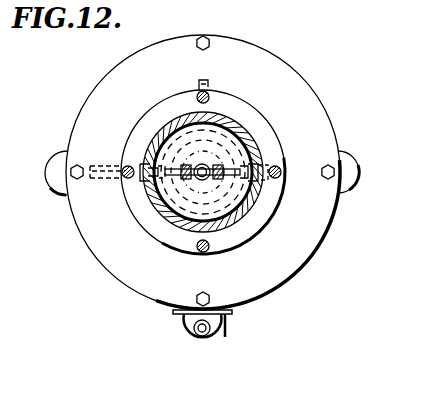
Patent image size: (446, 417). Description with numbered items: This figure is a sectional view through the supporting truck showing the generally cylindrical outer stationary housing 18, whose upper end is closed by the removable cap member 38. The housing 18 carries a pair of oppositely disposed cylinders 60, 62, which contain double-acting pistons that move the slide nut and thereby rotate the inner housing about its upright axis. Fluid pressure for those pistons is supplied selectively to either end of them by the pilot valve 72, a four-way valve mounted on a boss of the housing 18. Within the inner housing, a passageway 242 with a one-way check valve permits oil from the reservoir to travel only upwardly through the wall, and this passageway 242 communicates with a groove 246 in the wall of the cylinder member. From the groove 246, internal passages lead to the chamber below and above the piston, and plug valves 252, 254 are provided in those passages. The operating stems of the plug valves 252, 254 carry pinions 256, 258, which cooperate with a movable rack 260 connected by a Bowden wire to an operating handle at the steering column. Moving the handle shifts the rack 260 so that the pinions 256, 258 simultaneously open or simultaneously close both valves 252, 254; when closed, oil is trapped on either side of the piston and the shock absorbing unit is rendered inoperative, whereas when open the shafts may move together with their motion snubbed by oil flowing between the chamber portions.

The outer stationary housing 18 is at (286, 63).
The removable cap member 38 is at (306, 267).
The cylinder 60 is at (351, 184).
The cylinder 62 is at (60, 196).
The pilot valve 72 is at (233, 332).
The passageway 242 is at (98, 178).
The groove 246 is at (118, 165).
The plug valve 252 is at (150, 163).
The plug valve 254 is at (266, 153).
The pinion 256 is at (182, 167).
The pinion 258 is at (216, 167).
The movable rack 260 is at (196, 178).